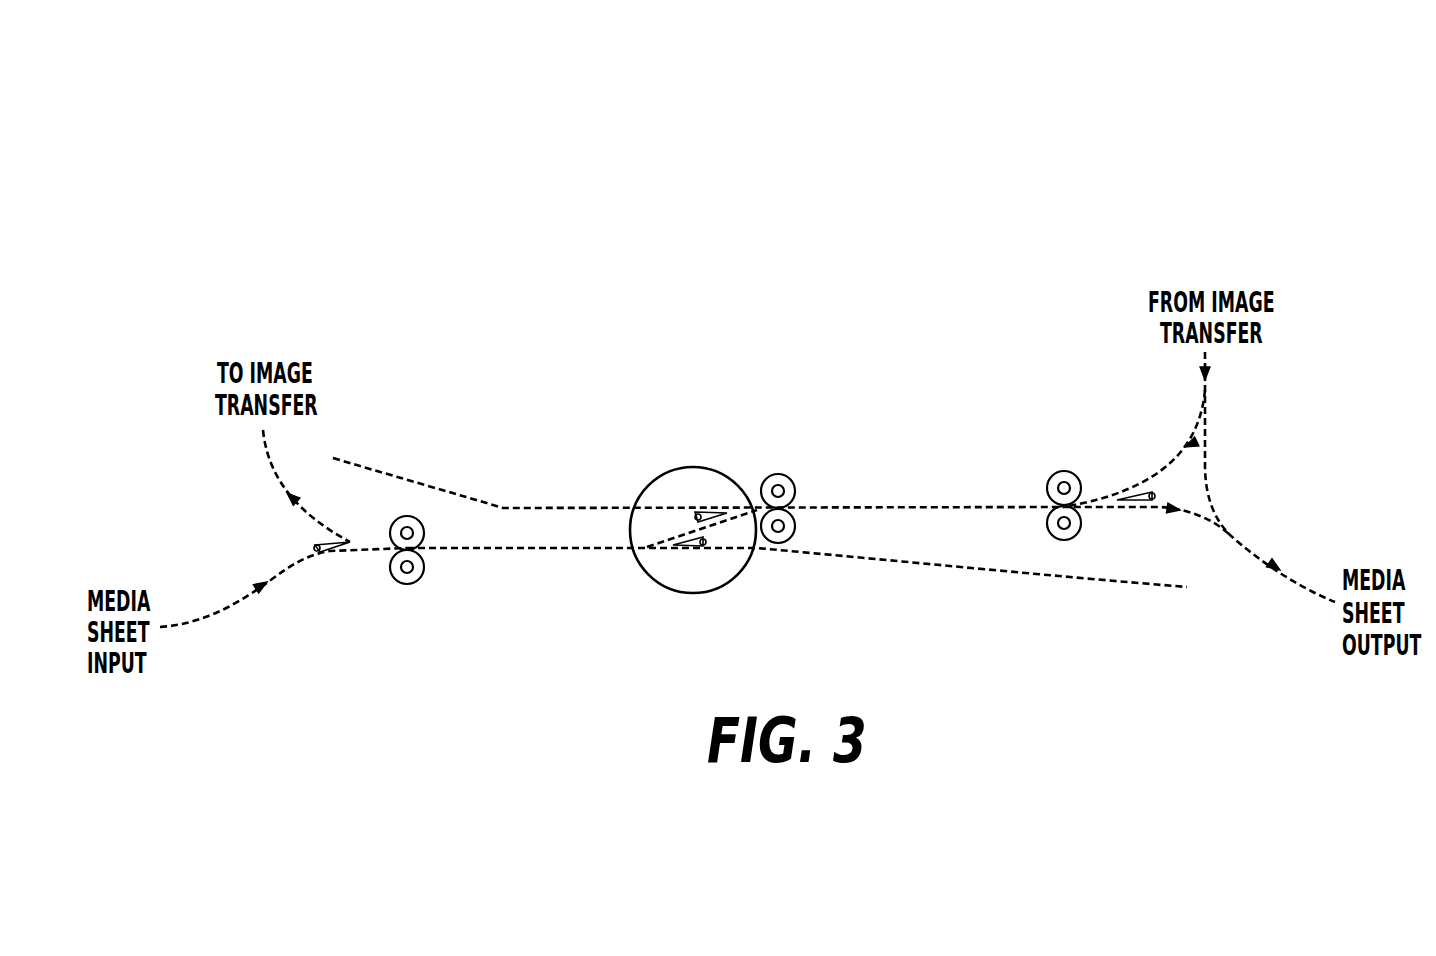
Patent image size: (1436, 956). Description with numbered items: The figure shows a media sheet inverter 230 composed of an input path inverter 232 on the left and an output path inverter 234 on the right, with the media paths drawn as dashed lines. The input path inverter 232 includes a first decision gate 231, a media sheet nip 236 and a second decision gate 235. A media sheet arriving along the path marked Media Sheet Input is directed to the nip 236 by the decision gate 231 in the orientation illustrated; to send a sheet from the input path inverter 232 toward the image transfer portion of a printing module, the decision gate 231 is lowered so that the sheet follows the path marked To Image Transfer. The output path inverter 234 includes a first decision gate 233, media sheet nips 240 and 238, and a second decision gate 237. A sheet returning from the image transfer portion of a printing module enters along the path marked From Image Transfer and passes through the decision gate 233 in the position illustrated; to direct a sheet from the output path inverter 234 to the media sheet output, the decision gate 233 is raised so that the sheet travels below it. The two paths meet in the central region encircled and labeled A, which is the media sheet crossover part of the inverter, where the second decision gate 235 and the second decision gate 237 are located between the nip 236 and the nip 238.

The media sheet inverter 230 is at (382, 335).
The first decision gate 231 is at (330, 553).
The input path inverter 232 is at (268, 526).
The first decision gate 233 is at (1137, 493).
The output path inverter 234 is at (1238, 460).
The second decision gate 235 is at (692, 548).
The media sheet nip 236 is at (401, 603).
The second decision gate 237 is at (705, 510).
The media sheet nip 238 is at (779, 464).
The media sheet nip 240 is at (1066, 460).
The media sheet crossover part A is at (653, 553).